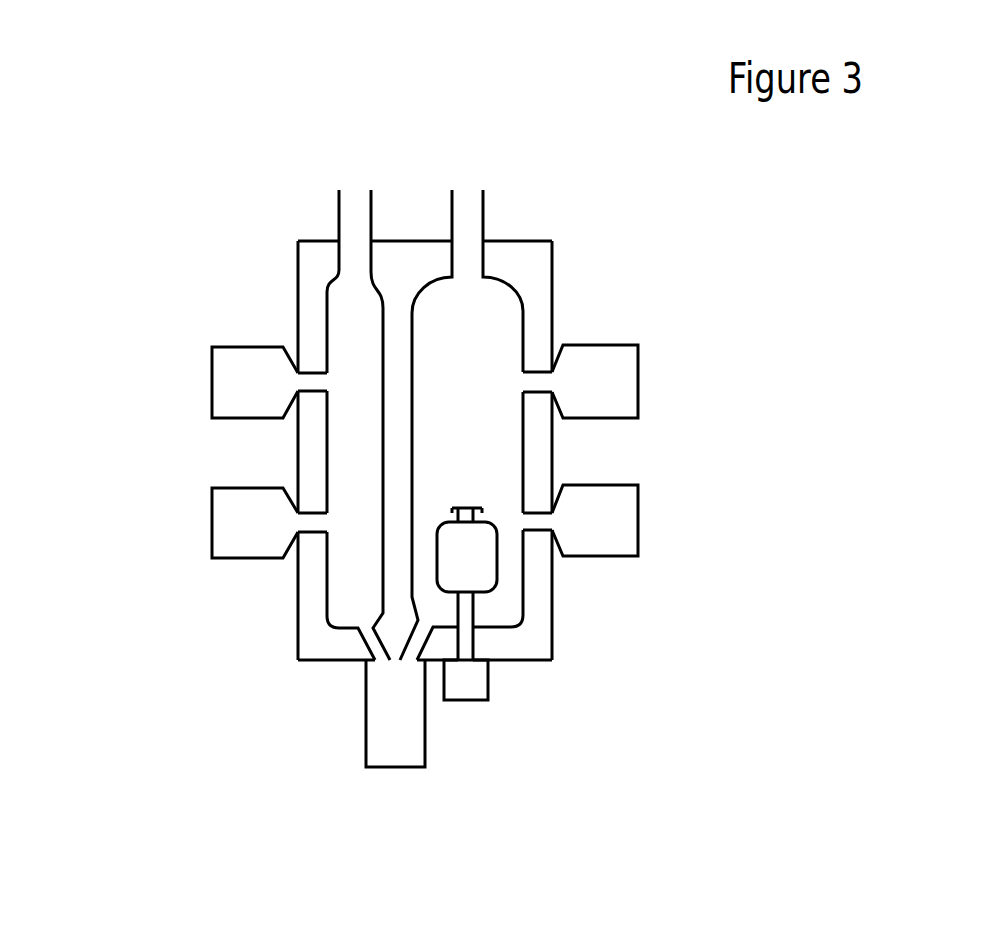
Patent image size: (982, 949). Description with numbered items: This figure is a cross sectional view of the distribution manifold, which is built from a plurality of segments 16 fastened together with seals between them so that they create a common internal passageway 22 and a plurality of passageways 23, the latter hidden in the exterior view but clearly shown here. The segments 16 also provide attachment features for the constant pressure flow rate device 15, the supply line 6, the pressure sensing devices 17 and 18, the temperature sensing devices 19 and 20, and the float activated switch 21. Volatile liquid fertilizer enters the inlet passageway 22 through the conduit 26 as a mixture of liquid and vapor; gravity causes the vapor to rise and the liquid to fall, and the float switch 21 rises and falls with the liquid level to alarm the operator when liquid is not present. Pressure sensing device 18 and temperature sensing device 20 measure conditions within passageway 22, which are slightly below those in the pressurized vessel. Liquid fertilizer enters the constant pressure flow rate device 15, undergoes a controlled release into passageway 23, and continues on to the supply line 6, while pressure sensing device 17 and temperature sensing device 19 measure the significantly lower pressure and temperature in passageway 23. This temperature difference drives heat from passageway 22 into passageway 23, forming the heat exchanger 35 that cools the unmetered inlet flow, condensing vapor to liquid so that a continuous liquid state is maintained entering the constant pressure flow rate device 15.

The supply line 6 is at (338, 190).
The conduit 26 is at (486, 188).
The segment 16 is at (520, 238).
The common internal passageway 22 is at (485, 335).
The passageway 23 is at (350, 320).
The pressure sensing device 17 is at (212, 382).
The temperature sensing device 19 is at (210, 525).
The pressure sensing device 18 is at (638, 380).
The temperature sensing device 20 is at (638, 520).
The float activated switch 21 is at (490, 588).
The constant pressure flow rate device 15 is at (395, 768).
The heat exchanger 35 is at (392, 673).